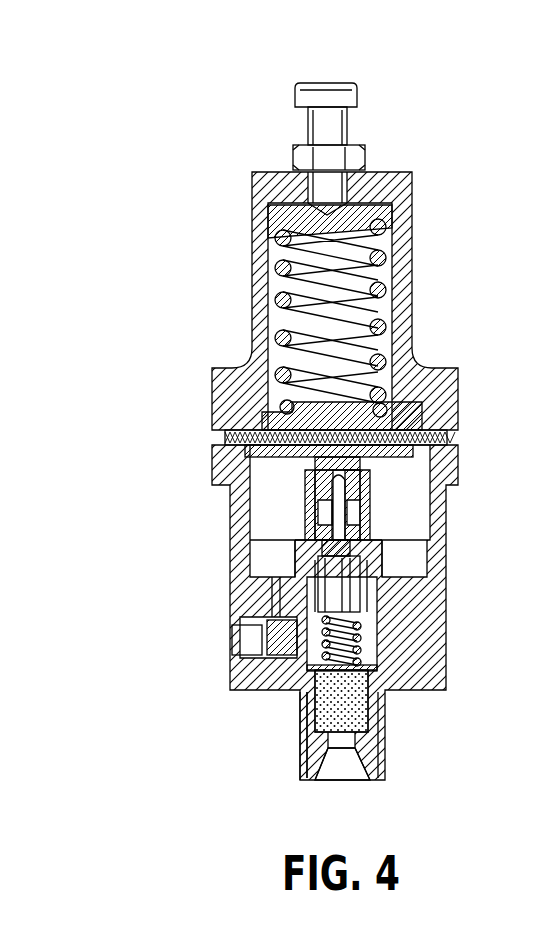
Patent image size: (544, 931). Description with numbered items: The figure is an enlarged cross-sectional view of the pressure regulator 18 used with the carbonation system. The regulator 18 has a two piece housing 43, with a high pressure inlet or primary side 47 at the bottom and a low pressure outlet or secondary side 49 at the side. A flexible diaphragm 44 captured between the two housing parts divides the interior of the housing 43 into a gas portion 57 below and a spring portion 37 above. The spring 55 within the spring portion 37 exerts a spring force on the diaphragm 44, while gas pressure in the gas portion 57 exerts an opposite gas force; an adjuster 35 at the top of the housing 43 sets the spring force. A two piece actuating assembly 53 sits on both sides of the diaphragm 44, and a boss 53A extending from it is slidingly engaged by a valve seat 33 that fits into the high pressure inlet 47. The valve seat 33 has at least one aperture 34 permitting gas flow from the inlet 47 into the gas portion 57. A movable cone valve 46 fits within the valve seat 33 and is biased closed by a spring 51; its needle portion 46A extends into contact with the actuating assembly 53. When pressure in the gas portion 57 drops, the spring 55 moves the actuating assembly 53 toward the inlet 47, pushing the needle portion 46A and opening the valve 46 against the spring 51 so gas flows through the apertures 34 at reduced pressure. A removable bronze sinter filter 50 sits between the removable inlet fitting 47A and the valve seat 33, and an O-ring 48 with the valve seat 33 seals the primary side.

The pressure regulator 18 is at (232, 158).
The adjuster 35 is at (360, 157).
The housing 43 is at (452, 383).
The gas portion 57 is at (265, 552).
The spring portion 37 is at (283, 322).
The spring 55 is at (283, 268).
The actuating assembly 53 is at (262, 420).
The boss 53A is at (326, 461).
The flexible diaphragm 44 is at (440, 440).
The aperture 34 is at (364, 517).
The valve seat 33 is at (368, 548).
The movable cone valve 46 is at (335, 545).
The needle portion 46A is at (347, 497).
The spring 51 is at (376, 646).
The O-ring 48 is at (382, 668).
The outlet or secondary side 49 is at (245, 660).
The bronze sinter filter 50 is at (345, 703).
The primary side or high pressure inlet 47 is at (343, 775).
The inlet fitting 47A is at (300, 740).